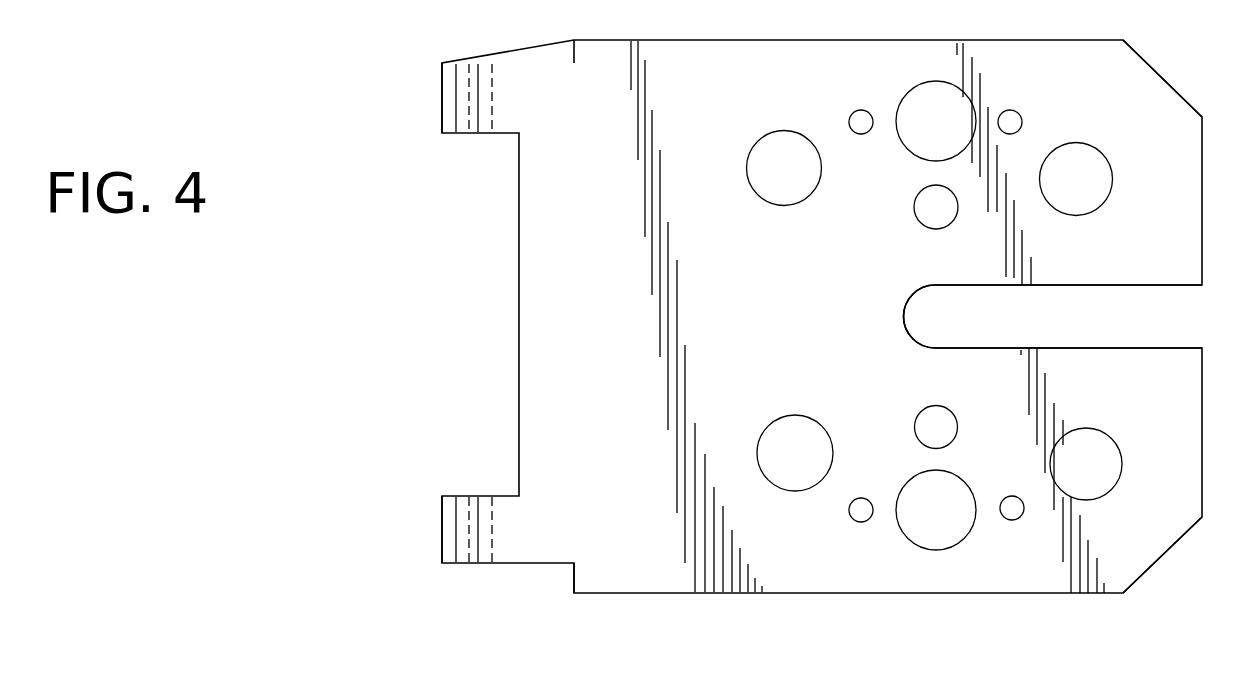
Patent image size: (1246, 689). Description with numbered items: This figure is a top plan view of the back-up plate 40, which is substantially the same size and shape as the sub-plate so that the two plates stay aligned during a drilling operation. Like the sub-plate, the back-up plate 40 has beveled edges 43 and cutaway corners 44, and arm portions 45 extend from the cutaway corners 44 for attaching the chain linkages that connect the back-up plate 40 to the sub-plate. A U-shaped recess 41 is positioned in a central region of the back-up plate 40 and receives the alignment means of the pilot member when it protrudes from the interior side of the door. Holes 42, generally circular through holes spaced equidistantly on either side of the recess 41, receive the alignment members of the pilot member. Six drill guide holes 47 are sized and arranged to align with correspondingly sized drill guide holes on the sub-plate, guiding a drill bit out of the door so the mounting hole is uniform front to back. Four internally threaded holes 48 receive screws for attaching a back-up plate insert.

The back-up plate 40 is at (371, 598).
The recess 41 is at (1097, 318).
The holes 42 is at (958, 205).
The beveled edges 43 is at (1180, 97).
The cutaway corners 44 is at (572, 59).
The arm portions 45 is at (442, 102).
The drill guide holes 47 is at (758, 140).
The holes 48 is at (853, 110).